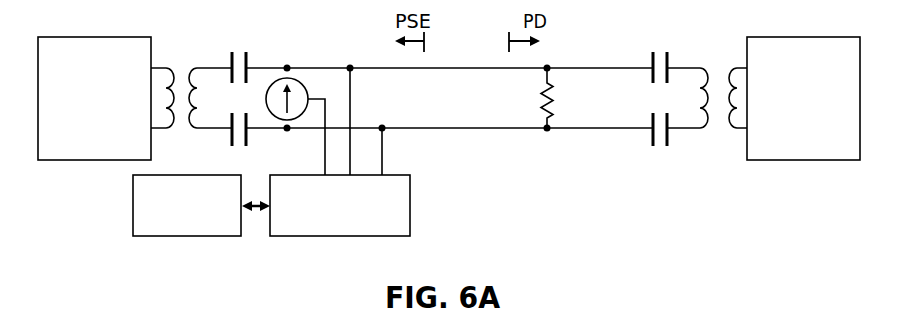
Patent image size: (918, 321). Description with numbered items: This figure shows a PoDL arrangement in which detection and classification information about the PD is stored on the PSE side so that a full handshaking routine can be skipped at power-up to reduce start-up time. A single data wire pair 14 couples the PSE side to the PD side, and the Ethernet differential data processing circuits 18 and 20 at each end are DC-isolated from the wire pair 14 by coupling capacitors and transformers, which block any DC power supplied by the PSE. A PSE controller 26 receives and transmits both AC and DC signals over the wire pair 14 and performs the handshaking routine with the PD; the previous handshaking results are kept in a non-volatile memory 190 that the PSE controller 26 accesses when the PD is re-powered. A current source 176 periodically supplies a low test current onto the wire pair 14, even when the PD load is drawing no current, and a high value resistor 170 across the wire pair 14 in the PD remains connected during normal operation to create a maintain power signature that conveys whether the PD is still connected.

The data wire pair 14 is at (485, 118).
The differential data processing circuit 18 is at (77, 160).
The differential data processing circuit 20 is at (793, 160).
The PSE controller 26 is at (410, 210).
The resistor 170 is at (553, 107).
The current source 176 is at (297, 81).
The non-volatile memory 190 is at (173, 237).